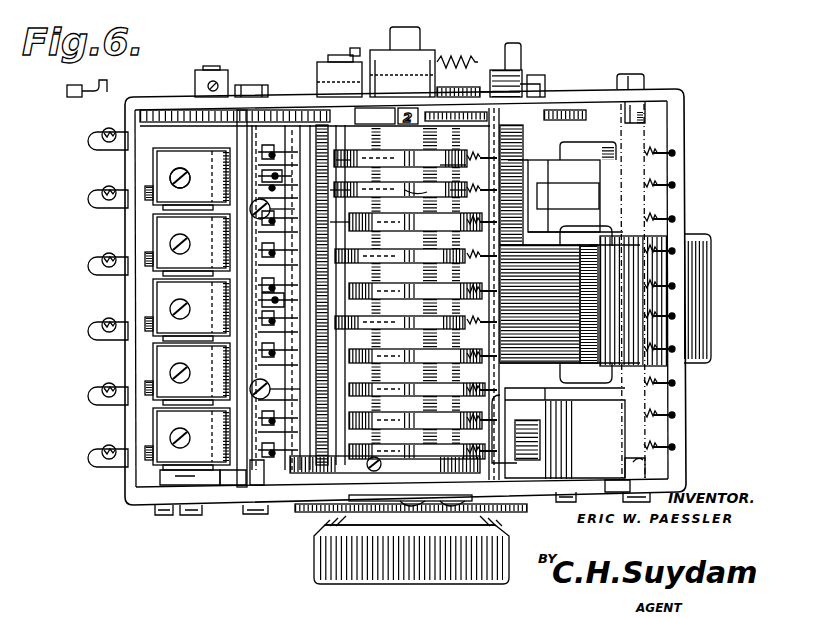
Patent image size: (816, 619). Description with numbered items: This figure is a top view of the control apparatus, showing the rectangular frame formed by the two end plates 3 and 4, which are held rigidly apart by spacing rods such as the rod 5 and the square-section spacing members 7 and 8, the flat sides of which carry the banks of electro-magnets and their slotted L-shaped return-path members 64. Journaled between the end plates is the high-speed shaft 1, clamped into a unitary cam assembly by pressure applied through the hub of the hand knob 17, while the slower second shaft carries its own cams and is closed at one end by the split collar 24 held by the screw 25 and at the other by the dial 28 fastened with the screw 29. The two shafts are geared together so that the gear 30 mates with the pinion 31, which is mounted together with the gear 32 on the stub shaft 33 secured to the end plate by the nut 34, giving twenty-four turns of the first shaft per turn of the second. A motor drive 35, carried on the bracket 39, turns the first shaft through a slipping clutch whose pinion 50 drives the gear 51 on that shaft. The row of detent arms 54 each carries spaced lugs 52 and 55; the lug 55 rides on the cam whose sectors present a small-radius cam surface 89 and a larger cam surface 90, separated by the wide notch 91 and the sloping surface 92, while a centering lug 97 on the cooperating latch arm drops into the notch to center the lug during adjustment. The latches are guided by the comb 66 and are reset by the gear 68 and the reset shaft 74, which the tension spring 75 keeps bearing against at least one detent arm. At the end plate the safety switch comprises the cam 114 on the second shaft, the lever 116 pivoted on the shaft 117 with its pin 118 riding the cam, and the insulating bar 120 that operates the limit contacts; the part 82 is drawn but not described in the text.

The shaft 1 is at (422, 40).
The end plate 3 is at (650, 100).
The end plate 4 is at (613, 482).
The spacing rod 5 is at (648, 117).
The spacing member 7 is at (240, 480).
The spacing member 8 is at (212, 483).
The hand knob 17 is at (455, 565).
The split collar 24 is at (385, 464).
The screw 25 is at (386, 465).
The dial 28 is at (450, 502).
The screw 29 is at (413, 510).
The gear 30 is at (413, 176).
The pinion 31 is at (525, 135).
The gear 32 is at (584, 118).
The stub shaft 33 is at (520, 100).
The nut 34 is at (518, 60).
The motor drive 35 is at (712, 282).
The bracket 39 is at (655, 438).
The pinion 50 is at (538, 76).
The gear 51 is at (457, 68).
The lug 52 is at (334, 222).
The detent arm 54 is at (272, 304).
The lug 55 is at (335, 192).
The L-shaped member 64 is at (165, 224).
The comb 66 is at (262, 490).
The gear 68 is at (375, 116).
The reset shaft 74 is at (310, 403).
The tension spring 75 is at (183, 156).
The contact 82 is at (269, 179).
The cam surface 89 is at (345, 162).
The cam surface 90 is at (458, 186).
The notch 91 is at (415, 192).
The sloping surface 92 is at (440, 166).
The centering lug 97 is at (280, 220).
The cam 114 is at (468, 62).
The lever 116 is at (326, 62).
The shaft 117 is at (338, 55).
The pin 118 is at (358, 50).
The insulating bar 120 is at (299, 80).